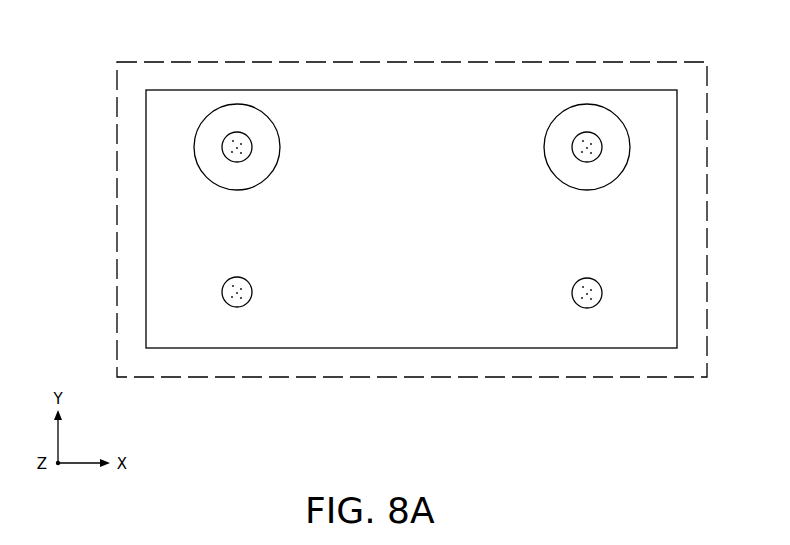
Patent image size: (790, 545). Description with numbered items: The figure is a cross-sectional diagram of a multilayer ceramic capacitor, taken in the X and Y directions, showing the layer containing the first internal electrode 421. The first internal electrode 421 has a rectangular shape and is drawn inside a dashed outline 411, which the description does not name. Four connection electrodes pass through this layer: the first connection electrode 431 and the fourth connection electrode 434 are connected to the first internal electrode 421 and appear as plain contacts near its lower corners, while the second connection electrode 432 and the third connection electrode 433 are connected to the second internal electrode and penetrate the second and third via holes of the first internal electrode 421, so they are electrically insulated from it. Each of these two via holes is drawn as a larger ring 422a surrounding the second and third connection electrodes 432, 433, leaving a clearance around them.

The substrate / first layer (dashed outline) 411 is at (371, 78).
The first internal electrode 421 is at (444, 110).
The first ring-shaped pattern 422a is at (273, 142).
The first connection electrode 431 is at (237, 300).
The second connection electrode 432 is at (238, 130).
The third connection electrode 433 is at (592, 147).
The fourth connection electrode 434 is at (590, 300).